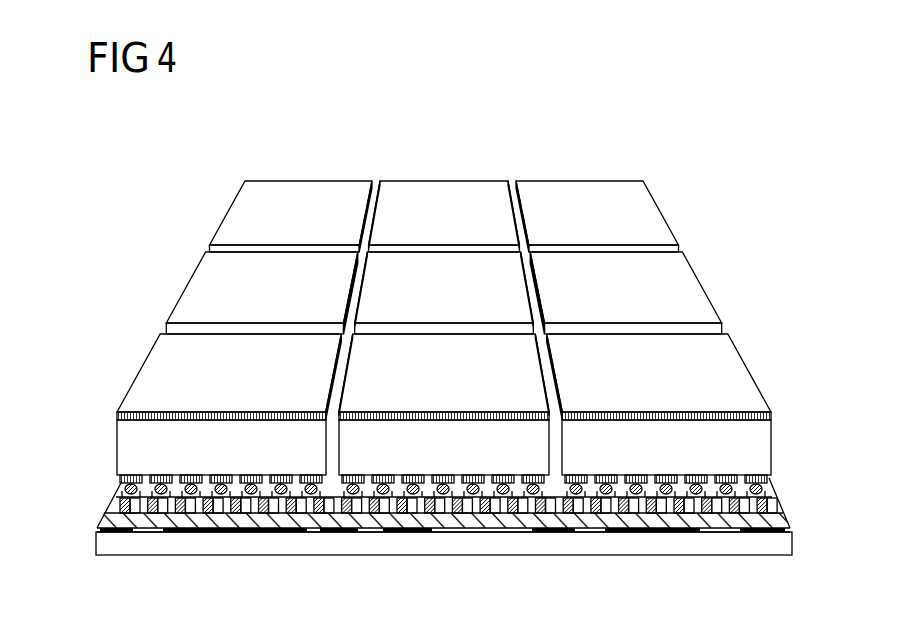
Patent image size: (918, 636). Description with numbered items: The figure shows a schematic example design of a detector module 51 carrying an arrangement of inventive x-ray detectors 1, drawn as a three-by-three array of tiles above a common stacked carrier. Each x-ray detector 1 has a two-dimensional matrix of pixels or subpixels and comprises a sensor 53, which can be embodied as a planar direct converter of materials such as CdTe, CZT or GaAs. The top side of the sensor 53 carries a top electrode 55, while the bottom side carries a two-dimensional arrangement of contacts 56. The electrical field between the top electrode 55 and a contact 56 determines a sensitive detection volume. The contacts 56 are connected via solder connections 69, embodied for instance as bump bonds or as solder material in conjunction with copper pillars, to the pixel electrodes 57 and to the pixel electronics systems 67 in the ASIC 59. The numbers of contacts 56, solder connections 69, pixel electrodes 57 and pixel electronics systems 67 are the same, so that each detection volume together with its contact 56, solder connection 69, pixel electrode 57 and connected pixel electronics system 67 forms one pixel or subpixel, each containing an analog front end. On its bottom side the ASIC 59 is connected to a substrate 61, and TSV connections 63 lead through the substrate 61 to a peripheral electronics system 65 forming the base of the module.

The x-ray detector 1 is at (718, 377).
The detector module 51 is at (198, 205).
The sensor 53 is at (753, 440).
The top electrode 55 is at (127, 417).
The contacts 56 is at (760, 478).
The pixel electrodes 57 is at (113, 503).
The ASIC 59 is at (792, 503).
The substrate 61 is at (775, 520).
The TSV connections 63 is at (602, 530).
The peripheral electronics system 65 is at (782, 543).
The pixel electronics systems 67 is at (430, 512).
The solder connections 69 is at (120, 488).